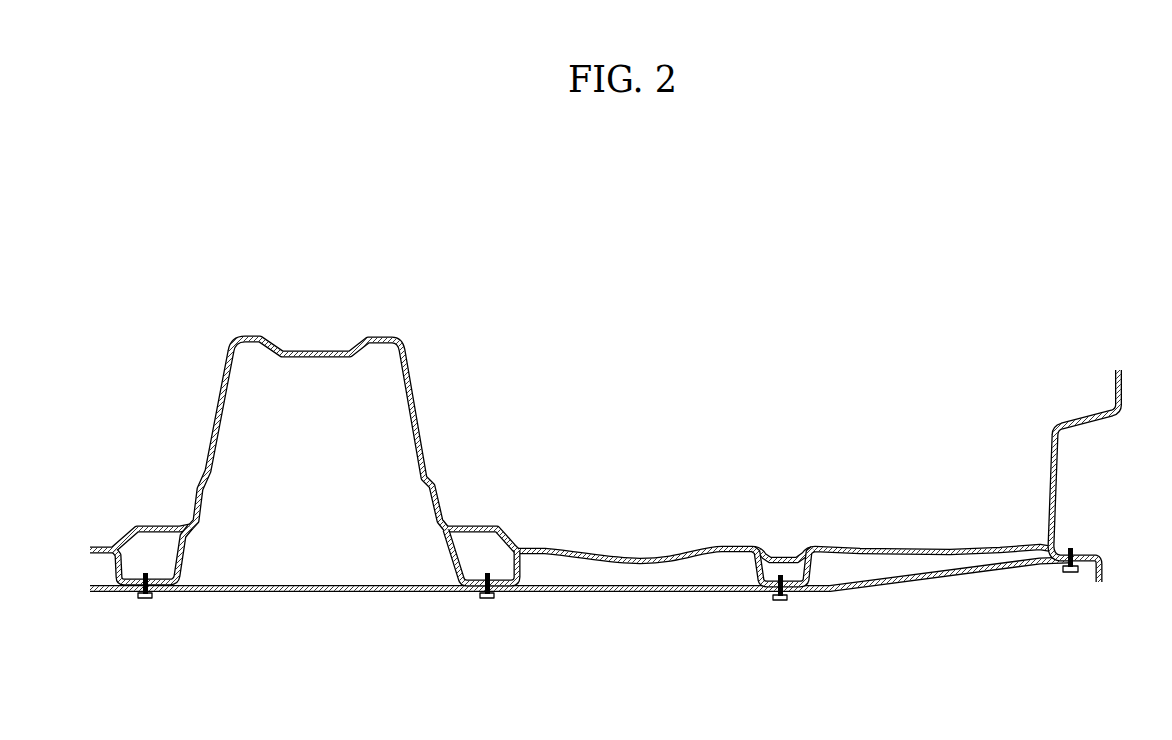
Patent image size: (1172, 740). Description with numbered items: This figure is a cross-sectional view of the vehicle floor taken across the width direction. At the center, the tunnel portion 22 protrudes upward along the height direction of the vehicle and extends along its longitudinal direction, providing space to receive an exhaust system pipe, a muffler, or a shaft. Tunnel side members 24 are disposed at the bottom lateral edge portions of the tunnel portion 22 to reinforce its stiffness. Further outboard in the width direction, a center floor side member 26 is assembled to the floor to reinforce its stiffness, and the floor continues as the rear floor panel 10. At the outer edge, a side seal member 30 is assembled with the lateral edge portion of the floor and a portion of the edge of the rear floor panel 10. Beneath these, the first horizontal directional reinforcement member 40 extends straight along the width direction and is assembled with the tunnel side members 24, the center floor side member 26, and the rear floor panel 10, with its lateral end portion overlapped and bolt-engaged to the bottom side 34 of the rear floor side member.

The rear floor panel 10 is at (637, 557).
The tunnel portion 22 is at (420, 397).
The tunnel side member 24 is at (113, 563).
The center floor side member 26 is at (813, 567).
The side seal member 30 is at (1049, 445).
The bottom side 34 is at (1073, 557).
The first horizontal directional reinforcement member 40 is at (698, 592).